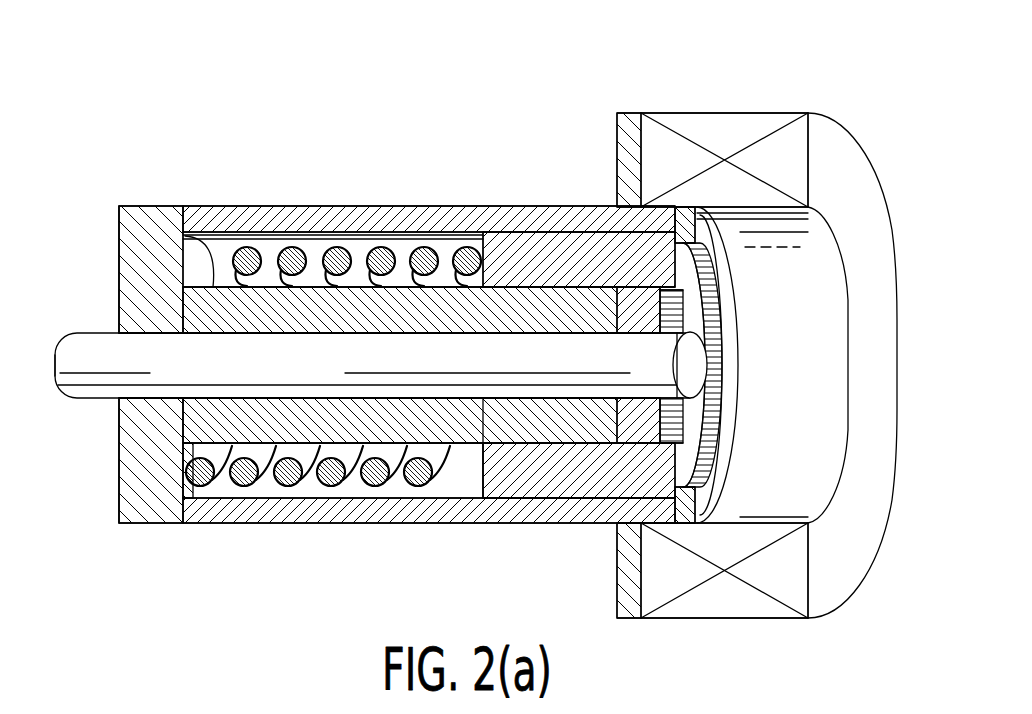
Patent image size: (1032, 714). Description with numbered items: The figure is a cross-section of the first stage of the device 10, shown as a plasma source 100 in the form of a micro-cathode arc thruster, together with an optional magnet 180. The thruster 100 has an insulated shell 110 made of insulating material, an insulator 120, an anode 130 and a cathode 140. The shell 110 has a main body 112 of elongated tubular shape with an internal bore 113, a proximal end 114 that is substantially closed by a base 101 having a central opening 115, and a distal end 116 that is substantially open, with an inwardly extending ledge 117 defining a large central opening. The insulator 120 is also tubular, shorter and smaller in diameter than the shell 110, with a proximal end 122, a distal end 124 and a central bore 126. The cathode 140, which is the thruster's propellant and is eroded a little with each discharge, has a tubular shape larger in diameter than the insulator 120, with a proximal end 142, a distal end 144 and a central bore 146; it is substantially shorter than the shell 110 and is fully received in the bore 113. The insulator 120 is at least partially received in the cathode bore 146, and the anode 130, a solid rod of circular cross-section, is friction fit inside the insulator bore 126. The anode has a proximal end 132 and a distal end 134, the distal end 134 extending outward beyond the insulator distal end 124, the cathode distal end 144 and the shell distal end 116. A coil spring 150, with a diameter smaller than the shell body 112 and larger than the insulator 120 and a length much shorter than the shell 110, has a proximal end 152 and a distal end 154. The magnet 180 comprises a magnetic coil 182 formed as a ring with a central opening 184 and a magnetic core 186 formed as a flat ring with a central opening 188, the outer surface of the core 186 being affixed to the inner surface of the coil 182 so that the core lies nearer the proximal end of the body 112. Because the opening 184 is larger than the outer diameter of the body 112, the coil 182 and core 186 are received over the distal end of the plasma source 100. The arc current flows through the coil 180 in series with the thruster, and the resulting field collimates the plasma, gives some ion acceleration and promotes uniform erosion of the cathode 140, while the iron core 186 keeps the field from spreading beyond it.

The actuator assembly 10 is at (208, 80).
The plasma source 100 is at (513, 105).
The base 101 is at (145, 295).
The insulated shell 110 is at (160, 250).
The main body 112 is at (478, 207).
The internal bore 113 is at (410, 225).
The proximal end 114 is at (120, 245).
The central opening 115 is at (118, 400).
The distal end 116 is at (703, 233).
The inwardly extending ledge 117 is at (728, 405).
The insulator 120 is at (600, 440).
The proximal end 122 is at (193, 305).
The distal end 124 is at (682, 322).
The central bore 126 is at (340, 470).
The anode 130 is at (365, 393).
The proximal end 132 is at (60, 385).
The distal end 134 is at (690, 365).
The cathode 140 is at (688, 470).
The proximal end 142 is at (512, 470).
The distal end 144 is at (690, 440).
The central bore 146 is at (478, 425).
The spring 150 is at (275, 490).
The proximal end 152 is at (195, 472).
The distal end 154 is at (372, 365).
The magnet 180 is at (840, 108).
The magnetic coil 182 is at (745, 197).
The central opening 184 is at (818, 295).
The magnetic core 186 is at (622, 150).
The central opening 188 is at (608, 195).